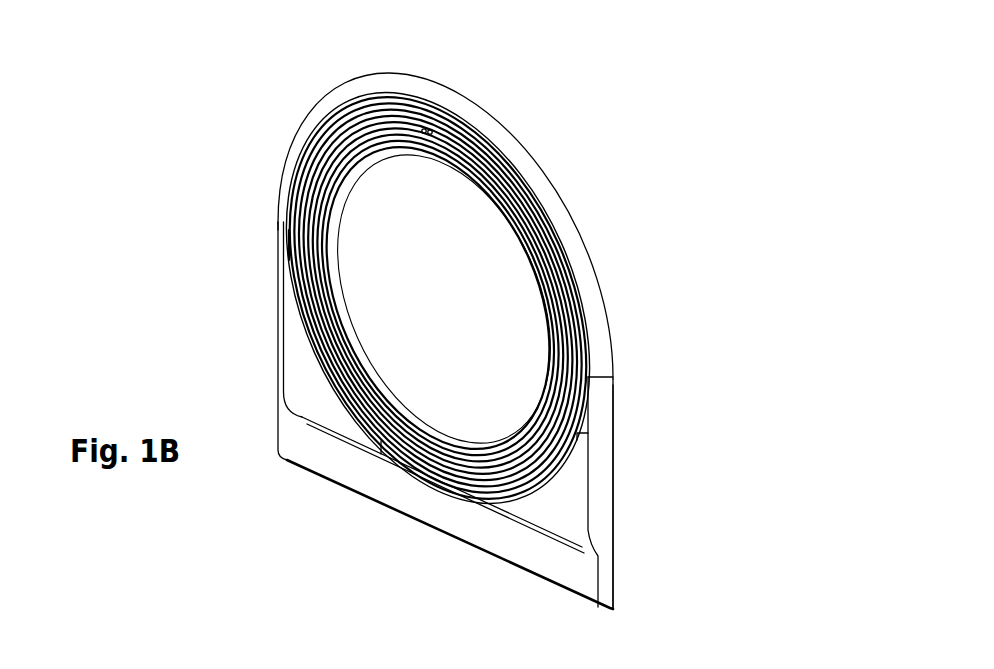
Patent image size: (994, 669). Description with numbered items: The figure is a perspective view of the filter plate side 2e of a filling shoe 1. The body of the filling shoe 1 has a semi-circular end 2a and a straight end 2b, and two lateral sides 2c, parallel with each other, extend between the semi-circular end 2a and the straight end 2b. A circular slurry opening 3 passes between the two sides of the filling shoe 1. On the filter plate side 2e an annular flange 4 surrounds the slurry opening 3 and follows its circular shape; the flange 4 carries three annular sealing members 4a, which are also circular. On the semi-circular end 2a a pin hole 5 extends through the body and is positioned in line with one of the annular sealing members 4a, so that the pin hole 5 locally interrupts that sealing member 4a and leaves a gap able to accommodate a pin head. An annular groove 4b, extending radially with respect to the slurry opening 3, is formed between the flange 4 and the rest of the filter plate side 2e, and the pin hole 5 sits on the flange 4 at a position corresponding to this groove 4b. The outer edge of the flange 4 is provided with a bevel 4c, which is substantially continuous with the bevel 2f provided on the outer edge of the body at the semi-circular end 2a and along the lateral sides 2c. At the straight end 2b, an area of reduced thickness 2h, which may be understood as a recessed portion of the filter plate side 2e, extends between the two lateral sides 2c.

The filling shoe 1 is at (206, 180).
The semi-circular end 2a is at (363, 72).
The straight end 2b is at (417, 520).
The lateral sides 2c is at (278, 328).
The filter plate side 2e is at (300, 384).
The bevel 2f is at (318, 115).
The area of reduced thickness 2h is at (360, 472).
The slurry opening 3 is at (510, 273).
The annular flange 4 is at (580, 428).
The annular sealing members 4a is at (288, 249).
The annular groove 4b is at (538, 210).
The bevel 4c is at (500, 164).
The pin hole 5 is at (433, 127).